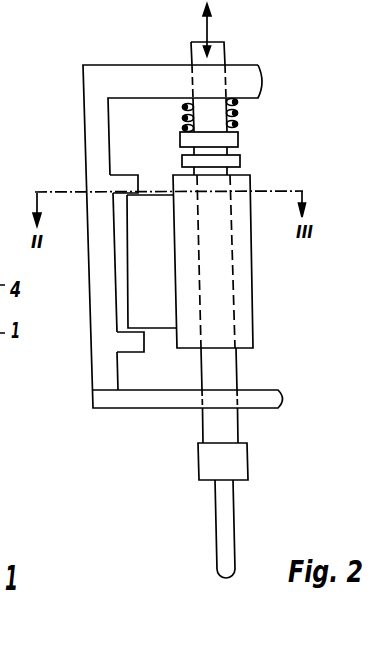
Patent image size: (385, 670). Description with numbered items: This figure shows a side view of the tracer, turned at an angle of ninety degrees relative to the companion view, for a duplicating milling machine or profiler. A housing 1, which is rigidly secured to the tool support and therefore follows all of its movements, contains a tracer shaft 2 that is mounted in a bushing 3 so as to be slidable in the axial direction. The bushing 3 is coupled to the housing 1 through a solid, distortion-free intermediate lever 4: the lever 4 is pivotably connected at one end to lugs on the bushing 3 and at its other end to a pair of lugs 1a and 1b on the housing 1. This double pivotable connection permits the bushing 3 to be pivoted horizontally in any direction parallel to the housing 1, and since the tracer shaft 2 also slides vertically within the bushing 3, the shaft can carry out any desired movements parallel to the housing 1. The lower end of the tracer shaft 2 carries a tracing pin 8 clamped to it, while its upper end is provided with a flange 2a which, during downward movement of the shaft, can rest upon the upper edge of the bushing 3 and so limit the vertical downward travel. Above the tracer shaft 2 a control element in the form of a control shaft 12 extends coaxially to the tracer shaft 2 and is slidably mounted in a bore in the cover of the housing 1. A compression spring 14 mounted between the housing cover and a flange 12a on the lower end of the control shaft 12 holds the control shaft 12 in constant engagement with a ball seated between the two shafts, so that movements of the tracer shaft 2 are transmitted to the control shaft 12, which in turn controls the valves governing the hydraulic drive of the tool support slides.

The housing 1 is at (95, 133).
The lug 1a is at (134, 338).
The lug 1b is at (130, 182).
The tracer shaft 2 is at (225, 366).
The flange 2a is at (240, 161).
The bushing 3 is at (242, 297).
The intermediate lever 4 is at (156, 280).
The tracing pin 8 is at (225, 533).
The control shaft 12 is at (220, 49).
The flange 12a is at (238, 137).
The compression spring 14 is at (237, 110).